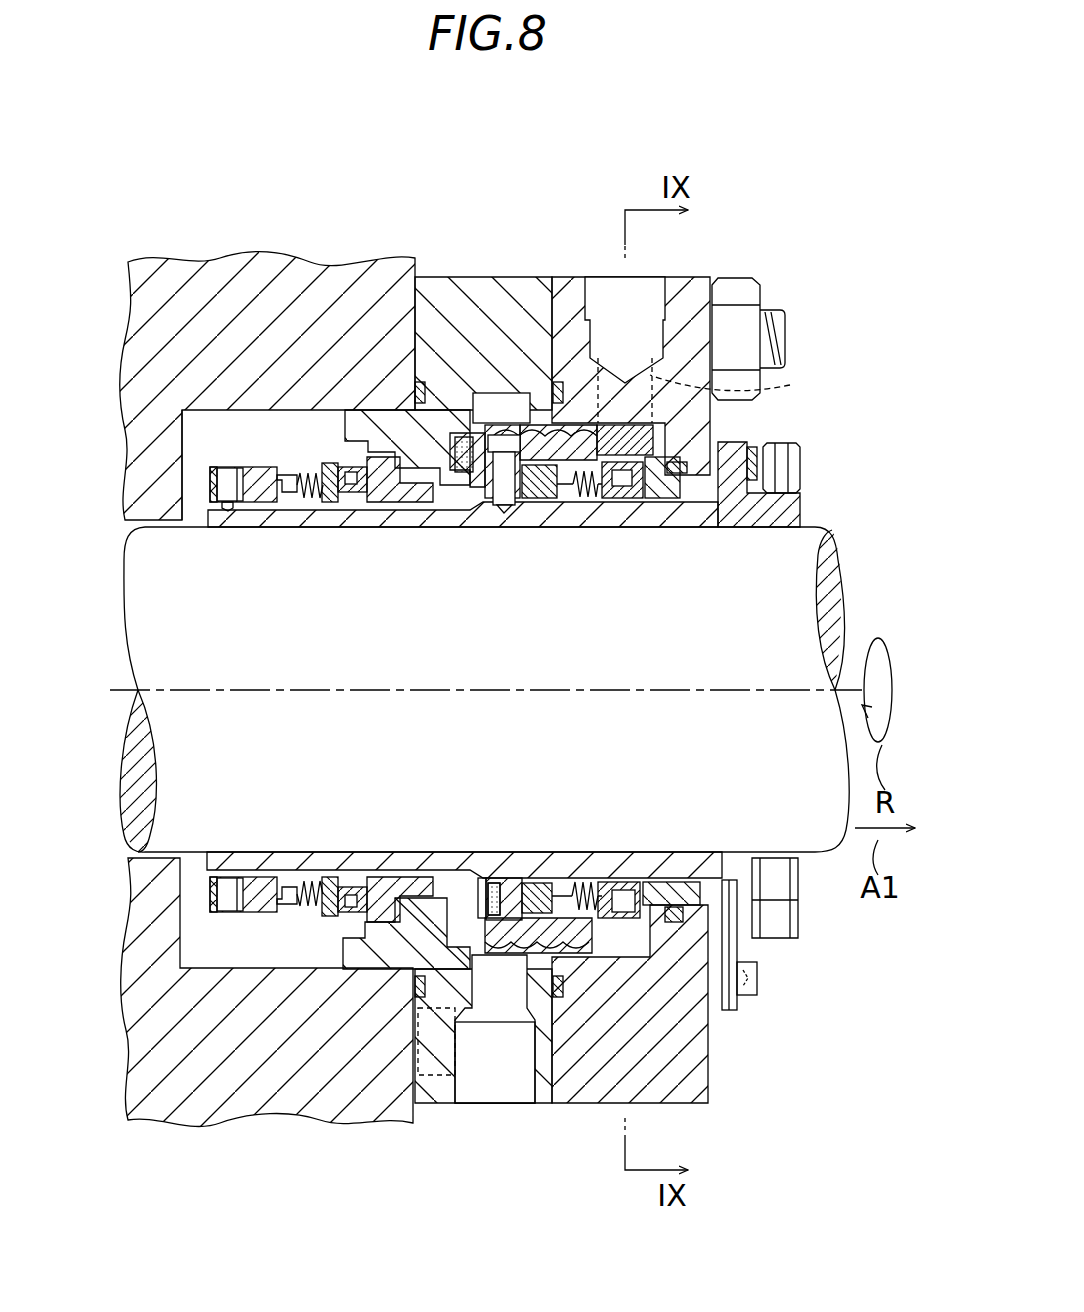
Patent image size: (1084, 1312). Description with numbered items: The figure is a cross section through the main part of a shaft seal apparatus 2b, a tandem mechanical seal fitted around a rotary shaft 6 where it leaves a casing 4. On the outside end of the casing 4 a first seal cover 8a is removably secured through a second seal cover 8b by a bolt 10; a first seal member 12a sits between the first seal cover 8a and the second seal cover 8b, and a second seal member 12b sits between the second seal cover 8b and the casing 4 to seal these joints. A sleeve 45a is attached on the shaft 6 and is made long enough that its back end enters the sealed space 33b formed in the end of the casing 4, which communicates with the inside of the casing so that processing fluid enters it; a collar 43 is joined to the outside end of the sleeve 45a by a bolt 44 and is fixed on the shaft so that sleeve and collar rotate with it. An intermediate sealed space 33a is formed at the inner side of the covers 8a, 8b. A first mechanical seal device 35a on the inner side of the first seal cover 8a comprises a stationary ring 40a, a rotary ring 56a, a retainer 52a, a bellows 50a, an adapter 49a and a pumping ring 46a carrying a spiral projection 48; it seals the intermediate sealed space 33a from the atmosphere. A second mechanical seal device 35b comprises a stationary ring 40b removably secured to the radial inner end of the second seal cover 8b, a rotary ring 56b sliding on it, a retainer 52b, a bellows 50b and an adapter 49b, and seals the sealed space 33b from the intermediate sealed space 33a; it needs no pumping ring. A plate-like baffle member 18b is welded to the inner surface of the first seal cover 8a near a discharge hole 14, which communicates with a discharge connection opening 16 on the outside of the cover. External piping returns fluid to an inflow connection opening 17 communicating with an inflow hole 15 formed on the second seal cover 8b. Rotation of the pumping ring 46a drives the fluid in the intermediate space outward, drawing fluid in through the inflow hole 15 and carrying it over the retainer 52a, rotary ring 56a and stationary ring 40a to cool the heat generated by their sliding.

The shaft seal apparatus 2b is at (755, 246).
The casing 4 is at (232, 290).
The rotary shaft 6 is at (175, 657).
The first seal cover 8a is at (692, 320).
The second seal cover 8b is at (455, 310).
The bolt 10 is at (788, 330).
The first seal member 12a is at (558, 382).
The second seal member 12b is at (421, 383).
The discharge hole 14 is at (736, 385).
The inflow hole 15 is at (497, 1000).
The discharge connection opening 16 is at (605, 292).
The inflow connection opening 17 is at (518, 1105).
The baffle member 18b is at (655, 448).
The intermediate sealed space 33a is at (510, 400).
The sealed space 33b is at (215, 445).
The first mechanical seal device 35a is at (541, 512).
The second mechanical seal device 35b is at (283, 530).
The stationary ring 40a is at (690, 878).
The stationary ring 40b is at (392, 530).
The collar 43 is at (790, 518).
The bolt 44 is at (795, 470).
The sleeve 45a is at (700, 530).
The pumping ring 46a is at (480, 858).
The spiral projection 48 is at (560, 1010).
The adapter 49a is at (538, 876).
The adapter 49b is at (230, 514).
The bellows 50a is at (580, 878).
The bellows 50b is at (332, 530).
The retainer 52a is at (650, 878).
The retainer 52b is at (336, 462).
The rotary ring 56a is at (668, 905).
The rotary ring 56b is at (350, 530).